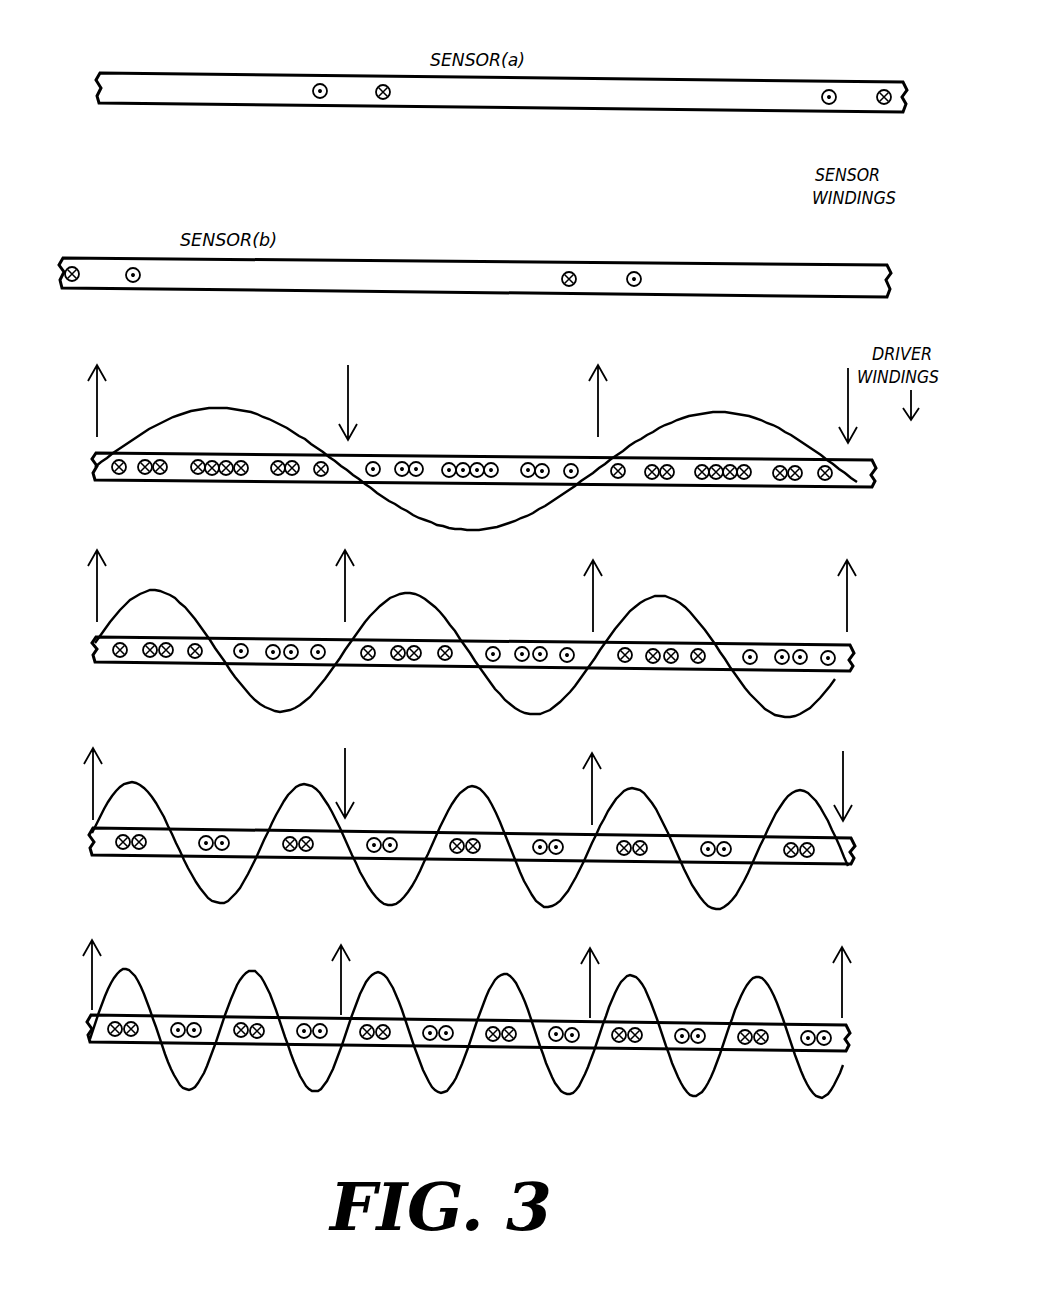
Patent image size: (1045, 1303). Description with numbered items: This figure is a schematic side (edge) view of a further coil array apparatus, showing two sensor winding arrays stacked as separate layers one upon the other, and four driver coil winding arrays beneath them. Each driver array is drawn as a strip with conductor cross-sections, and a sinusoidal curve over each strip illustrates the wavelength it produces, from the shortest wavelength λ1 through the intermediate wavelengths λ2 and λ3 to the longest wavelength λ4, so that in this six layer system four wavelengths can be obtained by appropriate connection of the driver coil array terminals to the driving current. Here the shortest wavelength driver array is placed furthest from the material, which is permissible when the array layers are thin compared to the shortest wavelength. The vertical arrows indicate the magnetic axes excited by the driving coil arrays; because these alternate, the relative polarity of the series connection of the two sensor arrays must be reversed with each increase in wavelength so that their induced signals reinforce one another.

The driver winding with wavelength λ 1 is at (301, 1119).
The driver winding with wavelength λ 2 is at (378, 930).
The driver winding with wavelength λ 3 is at (515, 744).
The driver winding with wavelength λ 4 is at (708, 546).